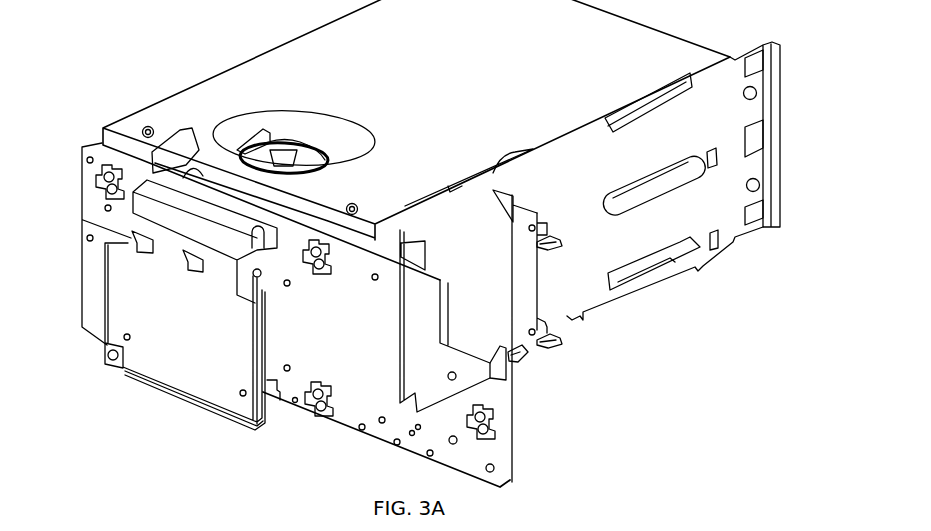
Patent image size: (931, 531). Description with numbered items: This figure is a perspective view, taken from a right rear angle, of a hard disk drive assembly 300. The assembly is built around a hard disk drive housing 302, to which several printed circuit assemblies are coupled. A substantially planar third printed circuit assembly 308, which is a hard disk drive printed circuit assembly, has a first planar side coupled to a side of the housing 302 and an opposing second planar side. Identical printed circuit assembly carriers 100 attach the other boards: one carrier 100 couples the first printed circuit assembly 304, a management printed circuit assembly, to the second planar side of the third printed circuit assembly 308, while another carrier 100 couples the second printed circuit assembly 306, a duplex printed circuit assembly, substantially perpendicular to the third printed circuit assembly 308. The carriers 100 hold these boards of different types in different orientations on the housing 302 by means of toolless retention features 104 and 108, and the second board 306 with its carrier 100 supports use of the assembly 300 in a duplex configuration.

The hard disk drive assembly 300 is at (667, 355).
The hard disk drive housing 302 is at (267, 50).
The first printed circuit assembly 304 is at (158, 352).
The third printed circuit assembly 308 is at (323, 368).
The printed circuit assembly carrier 100 is at (132, 223).
The toolless retention feature 104 is at (515, 368).
The toolless retention feature 108 is at (530, 338).
The second printed circuit assembly 306 is at (490, 320).